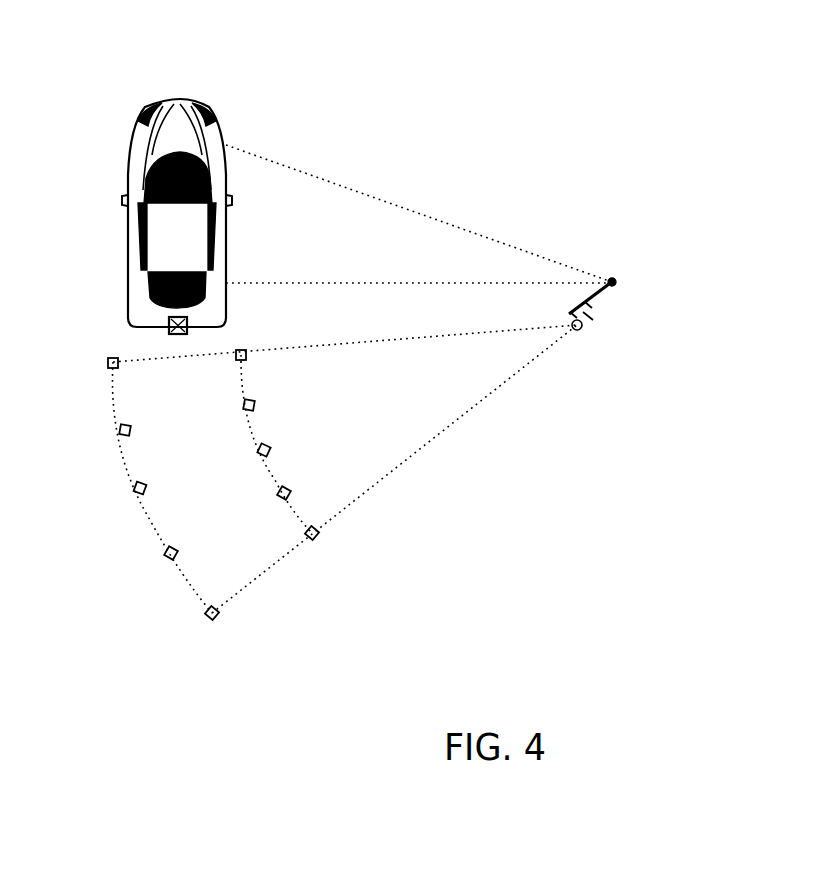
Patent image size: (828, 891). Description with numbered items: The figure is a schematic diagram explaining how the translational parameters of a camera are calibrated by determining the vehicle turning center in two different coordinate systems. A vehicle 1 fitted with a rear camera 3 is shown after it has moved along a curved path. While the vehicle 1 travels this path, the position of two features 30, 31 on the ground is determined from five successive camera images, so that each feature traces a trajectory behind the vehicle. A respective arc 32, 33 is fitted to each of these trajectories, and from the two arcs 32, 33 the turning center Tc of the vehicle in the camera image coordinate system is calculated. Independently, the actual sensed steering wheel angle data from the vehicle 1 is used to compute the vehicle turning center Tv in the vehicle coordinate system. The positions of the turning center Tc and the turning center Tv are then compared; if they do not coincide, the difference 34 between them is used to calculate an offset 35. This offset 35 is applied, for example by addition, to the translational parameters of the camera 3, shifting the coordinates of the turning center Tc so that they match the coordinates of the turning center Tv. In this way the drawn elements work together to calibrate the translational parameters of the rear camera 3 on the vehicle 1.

The vehicle 1 is at (140, 80).
The rear camera 3 is at (168, 329).
The feature 30 is at (100, 372).
The feature 31 is at (268, 400).
The arc 32 is at (155, 522).
The arc 33 is at (292, 500).
The difference 34 is at (582, 300).
The offset 35 is at (605, 306).
The vehicle turning center in the vehicle coordinate system Tv is at (615, 283).
The vehicle turning center in the camera image coordinate system Tc is at (584, 333).